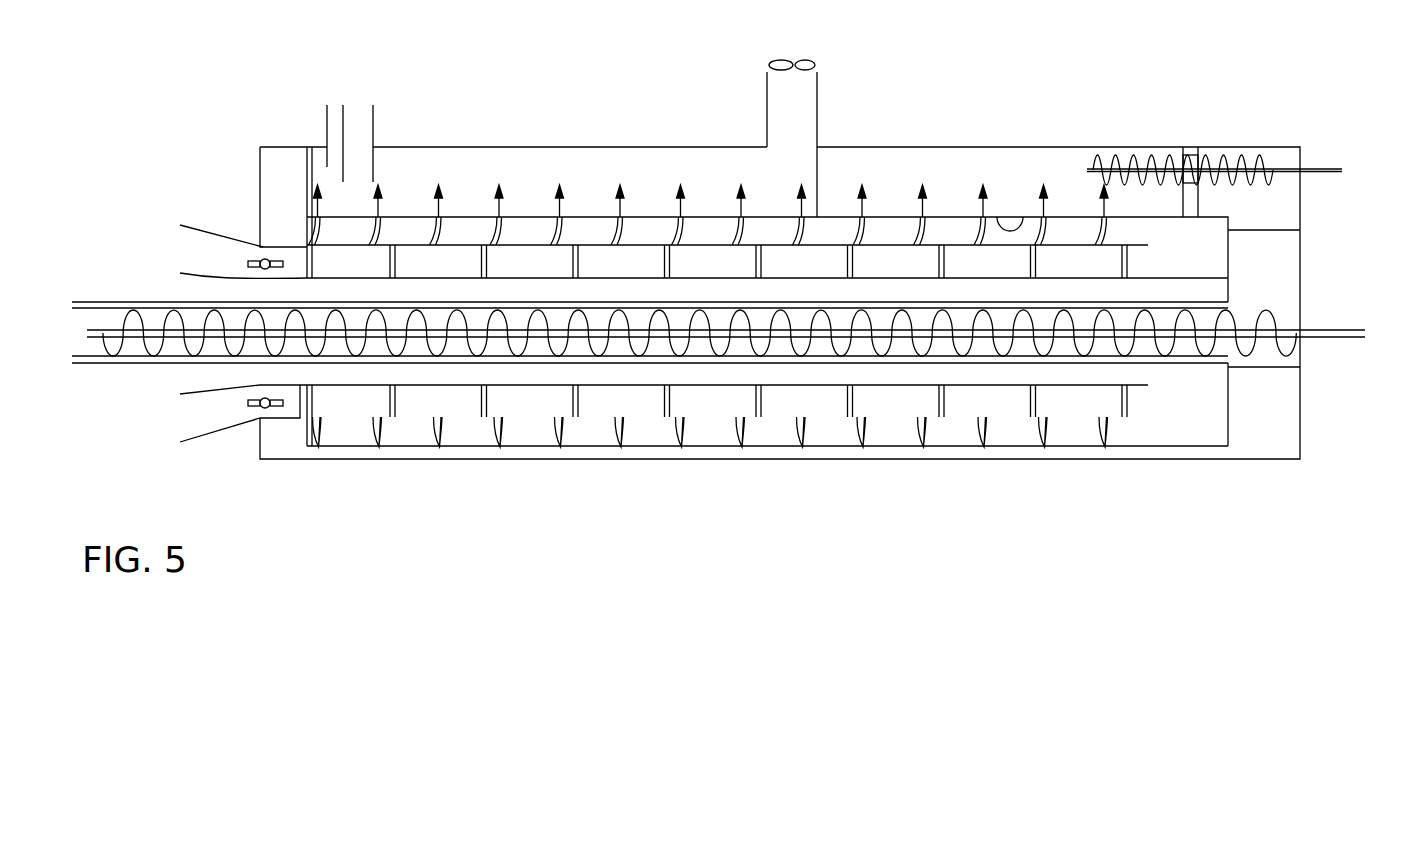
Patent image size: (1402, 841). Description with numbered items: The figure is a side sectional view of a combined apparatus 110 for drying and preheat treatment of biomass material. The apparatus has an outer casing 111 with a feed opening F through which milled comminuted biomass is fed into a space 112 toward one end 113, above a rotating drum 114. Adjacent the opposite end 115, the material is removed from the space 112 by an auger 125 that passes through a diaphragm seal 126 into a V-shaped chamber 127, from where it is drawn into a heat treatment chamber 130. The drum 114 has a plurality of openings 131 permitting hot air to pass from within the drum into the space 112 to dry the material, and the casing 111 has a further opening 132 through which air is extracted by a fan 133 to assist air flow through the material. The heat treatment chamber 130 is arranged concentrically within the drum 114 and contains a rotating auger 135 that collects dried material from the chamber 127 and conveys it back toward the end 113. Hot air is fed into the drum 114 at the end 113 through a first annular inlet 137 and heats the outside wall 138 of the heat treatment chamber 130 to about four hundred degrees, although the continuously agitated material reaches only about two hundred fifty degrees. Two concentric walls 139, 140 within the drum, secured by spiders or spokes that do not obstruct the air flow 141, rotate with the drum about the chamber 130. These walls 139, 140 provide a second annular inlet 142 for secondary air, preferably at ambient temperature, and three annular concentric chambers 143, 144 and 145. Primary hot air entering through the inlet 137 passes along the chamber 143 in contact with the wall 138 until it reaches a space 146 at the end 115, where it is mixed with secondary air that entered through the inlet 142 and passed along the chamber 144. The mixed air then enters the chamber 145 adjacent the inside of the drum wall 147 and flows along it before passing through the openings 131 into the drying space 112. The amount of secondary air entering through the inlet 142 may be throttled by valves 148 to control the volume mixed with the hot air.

The combined apparatus for drying and preheat treatment 110 is at (989, 131).
The outer casing 111 is at (912, 144).
The space 112 is at (711, 186).
The one end 113 is at (327, 132).
The rotating drum 114 is at (818, 217).
The opposite end 115 is at (1102, 146).
The auger 125 is at (1273, 162).
The diaphragm seal 126 is at (1193, 152).
The V-shaped chamber 127 is at (1273, 270).
The heat treatment chamber 130 is at (1167, 362).
The openings 131 is at (558, 228).
The further opening 132 is at (818, 97).
The fan 133 is at (768, 62).
The rotating auger 135 is at (905, 338).
The first annular inlet 137 is at (223, 292).
The outside wall 138 is at (382, 318).
The concentric wall 139 is at (523, 278).
The concentric wall 140 is at (650, 244).
The air flow 141 is at (752, 270).
The second annular inlet 142 is at (187, 250).
The annular chamber 143 is at (437, 290).
The annular chamber 144 is at (858, 262).
The annular chamber 145 is at (707, 437).
The space 146 is at (333, 373).
The drum wall 147 is at (1023, 220).
The valve 148 is at (253, 260).
The feed opening F is at (378, 130).